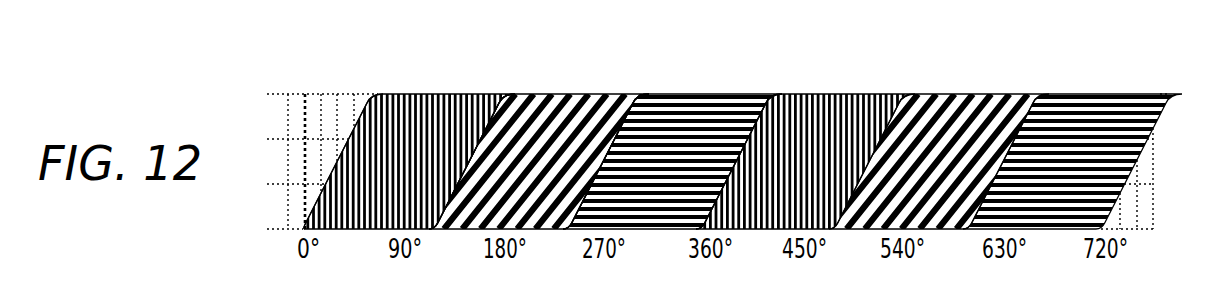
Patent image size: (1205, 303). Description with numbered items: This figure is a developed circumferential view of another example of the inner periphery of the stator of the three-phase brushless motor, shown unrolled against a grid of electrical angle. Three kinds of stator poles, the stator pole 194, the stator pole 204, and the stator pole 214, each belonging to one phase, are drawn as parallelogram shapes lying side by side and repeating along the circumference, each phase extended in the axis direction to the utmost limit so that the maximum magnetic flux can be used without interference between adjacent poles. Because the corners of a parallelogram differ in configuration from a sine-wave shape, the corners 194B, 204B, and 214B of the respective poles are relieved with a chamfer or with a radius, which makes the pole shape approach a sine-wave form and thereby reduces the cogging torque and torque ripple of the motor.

The stator pole 194 is at (412, 128).
The corner of stator pole 194B is at (370, 102).
The stator pole 204 is at (547, 120).
The corner of stator pole 204B is at (508, 96).
The stator pole 214 is at (680, 130).
The corner of stator pole 214B is at (638, 97).